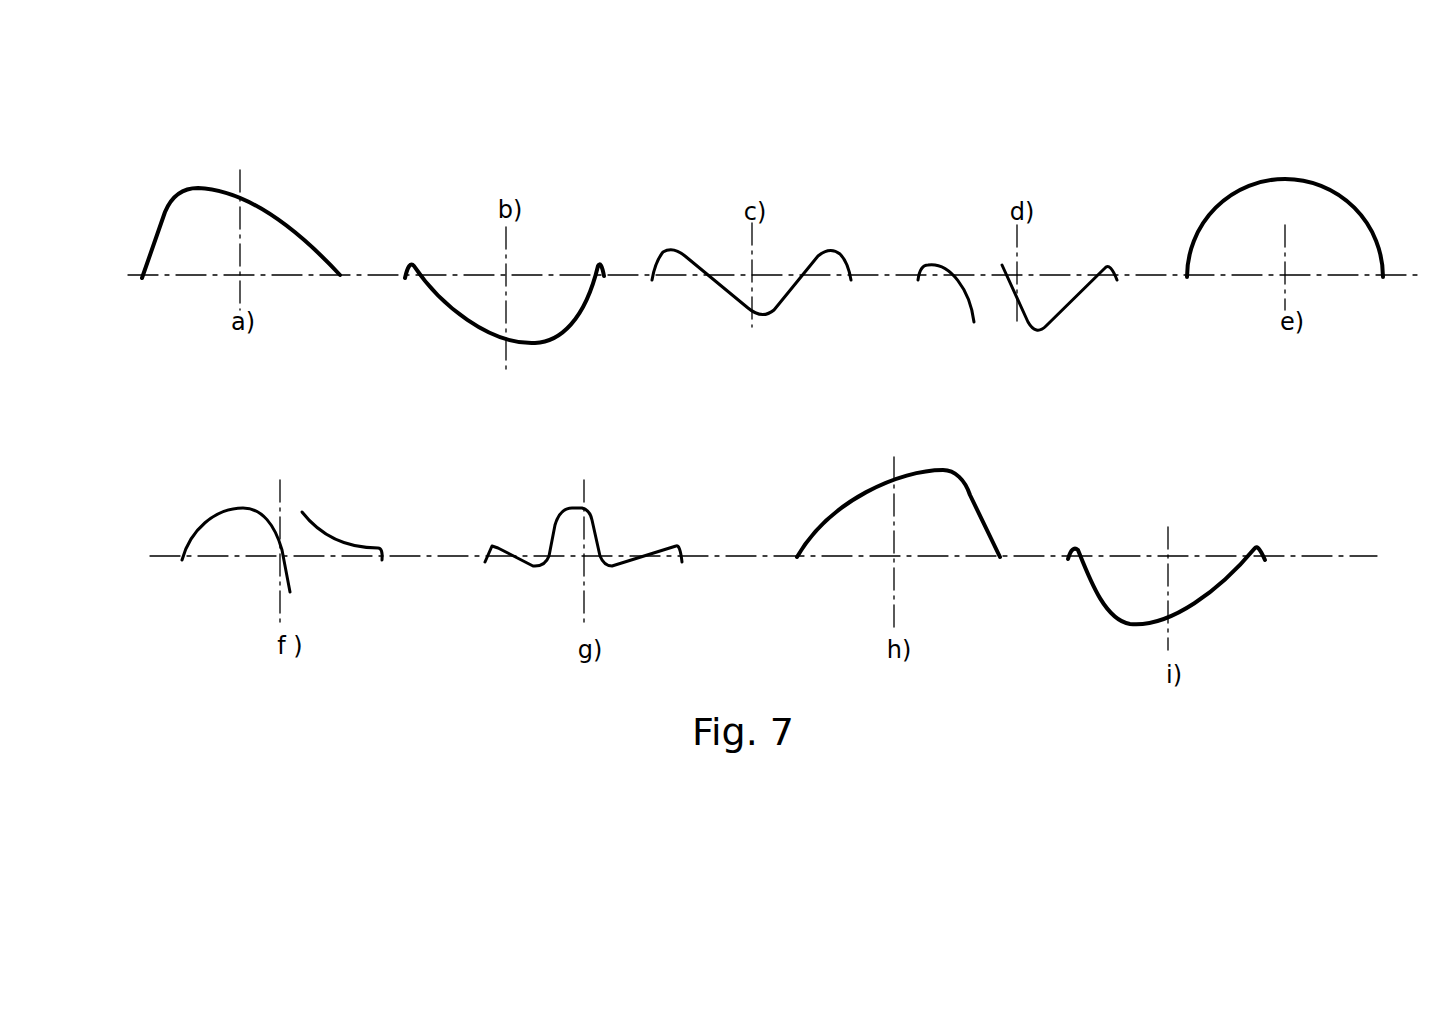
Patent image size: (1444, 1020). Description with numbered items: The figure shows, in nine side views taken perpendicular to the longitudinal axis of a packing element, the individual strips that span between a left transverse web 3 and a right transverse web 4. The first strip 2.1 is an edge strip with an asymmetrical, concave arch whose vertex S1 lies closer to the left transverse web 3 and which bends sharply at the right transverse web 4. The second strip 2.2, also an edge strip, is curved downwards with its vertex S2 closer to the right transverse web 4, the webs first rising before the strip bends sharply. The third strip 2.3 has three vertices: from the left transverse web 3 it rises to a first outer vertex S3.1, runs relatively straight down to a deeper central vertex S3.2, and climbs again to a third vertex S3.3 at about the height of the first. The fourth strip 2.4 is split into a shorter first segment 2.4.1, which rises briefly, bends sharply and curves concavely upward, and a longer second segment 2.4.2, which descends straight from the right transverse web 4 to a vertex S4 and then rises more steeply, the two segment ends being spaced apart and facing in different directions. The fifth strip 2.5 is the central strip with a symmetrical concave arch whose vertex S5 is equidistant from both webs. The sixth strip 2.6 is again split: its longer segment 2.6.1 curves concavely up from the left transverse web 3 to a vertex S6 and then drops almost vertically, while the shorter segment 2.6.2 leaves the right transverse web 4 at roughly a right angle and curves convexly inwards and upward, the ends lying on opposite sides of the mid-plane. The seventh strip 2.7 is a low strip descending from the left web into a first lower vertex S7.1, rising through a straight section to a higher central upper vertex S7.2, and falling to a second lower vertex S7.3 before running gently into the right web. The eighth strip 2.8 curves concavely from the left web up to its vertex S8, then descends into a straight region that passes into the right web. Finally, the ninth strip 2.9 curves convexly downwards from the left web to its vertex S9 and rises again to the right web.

The first transverse web 3 is at (143, 272).
The second transverse web 4 is at (342, 272).
The first strip 2.1 is at (215, 188).
The vertex of the first strip S1 is at (195, 188).
The second strip 2.2 is at (470, 322).
The vertex of the second strip S2 is at (540, 345).
The third strip 2.3 is at (720, 285).
The first outer vertex S3.1 is at (673, 250).
The central vertex S3.2 is at (766, 318).
The third vertex S3.3 is at (831, 250).
The fourth strip 2.4 is at (1023, 275).
The first segment 2.4.1 is at (940, 268).
The second segment 2.4.2 is at (1080, 300).
The vertex of the second segment S4 is at (1035, 333).
The fifth strip 2.5 is at (1340, 205).
The vertex of the fifth strip S5 is at (1285, 186).
The sixth strip 2.6 is at (248, 563).
The first segment of the sixth strip 2.6.1 is at (195, 528).
The second segment of the sixth strip 2.6.2 is at (330, 530).
The vertex of the sixth strip S6 is at (243, 507).
The seventh strip 2.7 is at (595, 535).
The first lower vertex S7.1 is at (533, 566).
The central upper vertex S7.2 is at (568, 508).
The second lower vertex S7.3 is at (610, 566).
The eighth strip 2.8 is at (860, 490).
The vertex of the eighth strip S8 is at (940, 470).
The ninth strip 2.9 is at (1205, 608).
The vertex of the ninth strip S9 is at (1128, 626).